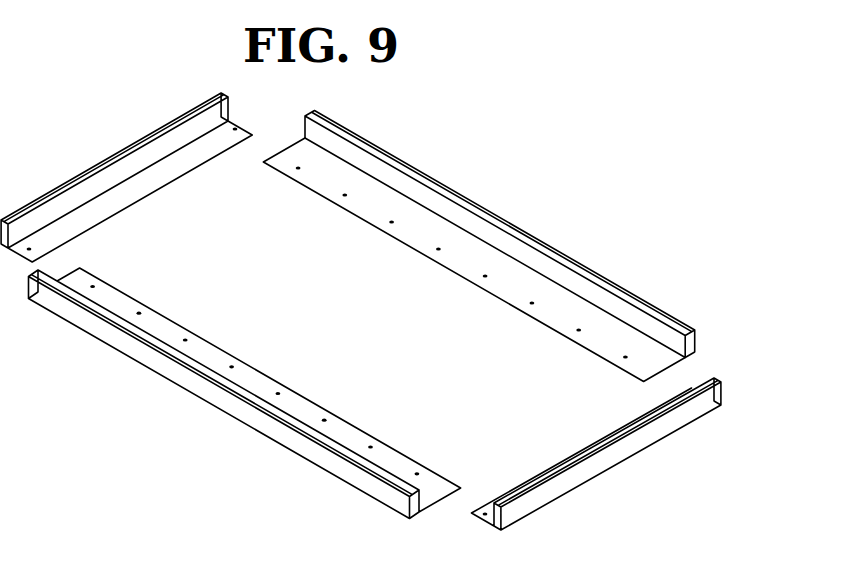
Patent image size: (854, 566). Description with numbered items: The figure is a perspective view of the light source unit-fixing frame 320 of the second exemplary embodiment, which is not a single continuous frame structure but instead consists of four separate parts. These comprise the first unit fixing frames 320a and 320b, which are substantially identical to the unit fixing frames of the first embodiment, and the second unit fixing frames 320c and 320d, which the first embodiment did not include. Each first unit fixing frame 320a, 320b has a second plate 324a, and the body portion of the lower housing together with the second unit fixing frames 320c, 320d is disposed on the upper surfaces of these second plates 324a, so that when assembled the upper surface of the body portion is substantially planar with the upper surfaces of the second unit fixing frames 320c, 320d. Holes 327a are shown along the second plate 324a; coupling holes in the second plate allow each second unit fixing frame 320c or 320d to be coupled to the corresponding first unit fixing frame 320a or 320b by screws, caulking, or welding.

The light source unit-fixing frame 320 is at (361, 311).
The first unit fixing frame 320a is at (478, 246).
The first unit fixing frame 320b is at (216, 403).
The second unit fixing frame 320c is at (110, 178).
The second unit fixing frame 320d is at (624, 461).
The second plate 324a is at (600, 343).
The fastening holes 327a is at (577, 331).